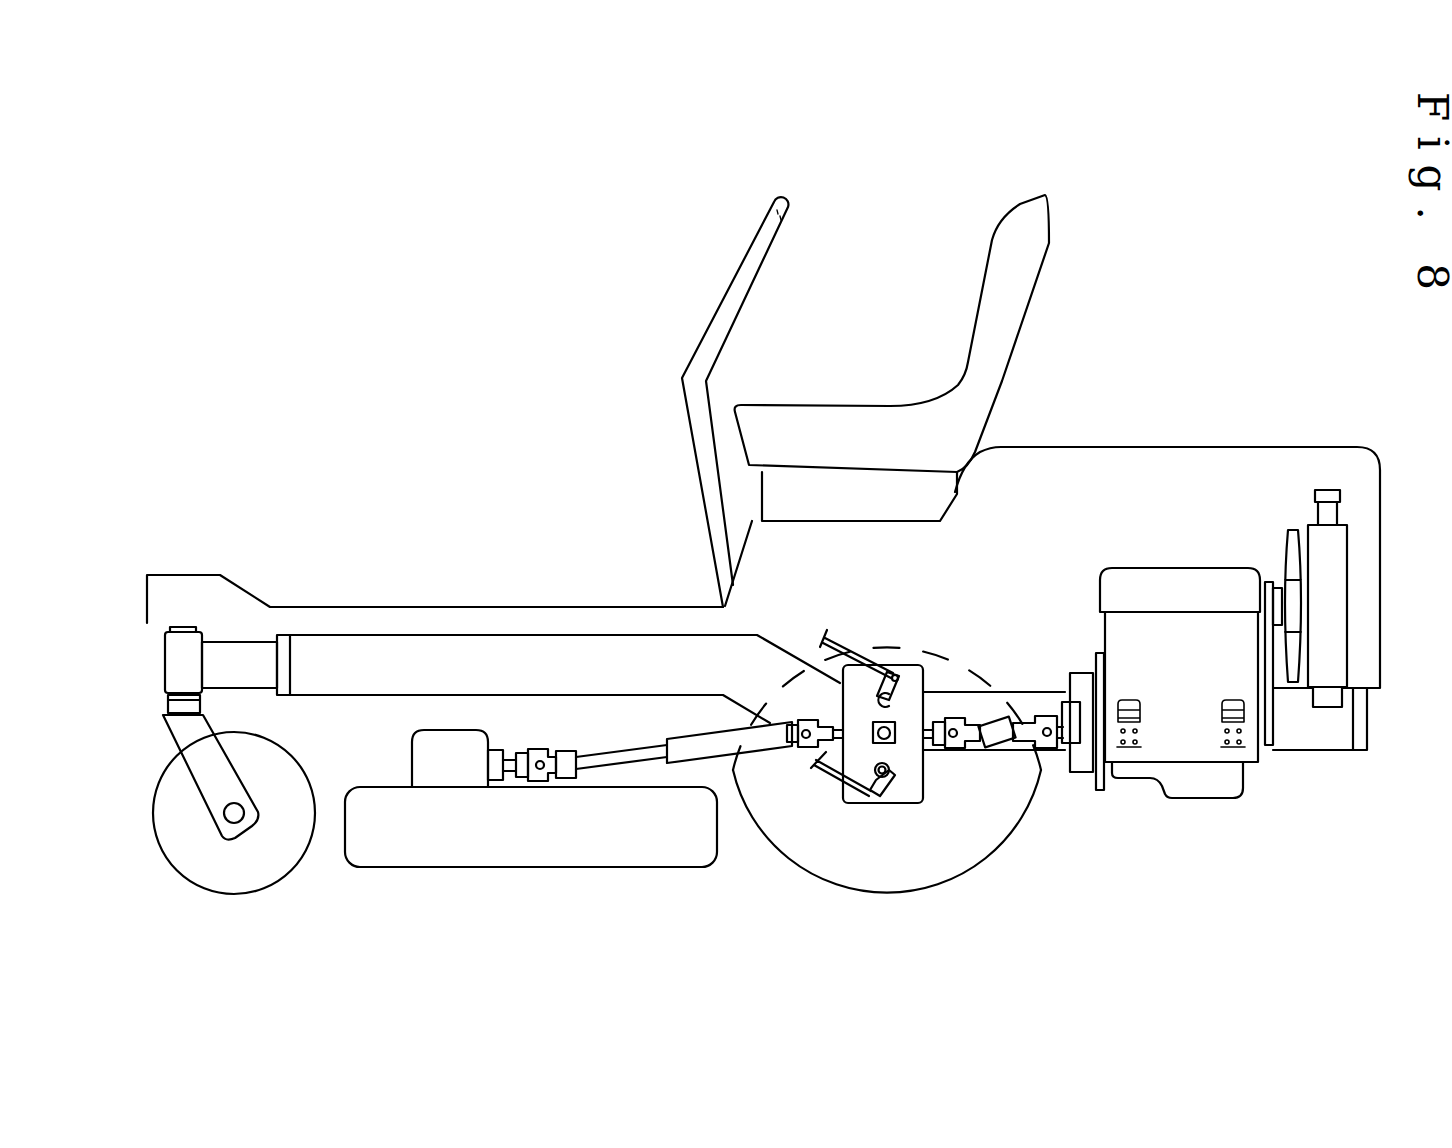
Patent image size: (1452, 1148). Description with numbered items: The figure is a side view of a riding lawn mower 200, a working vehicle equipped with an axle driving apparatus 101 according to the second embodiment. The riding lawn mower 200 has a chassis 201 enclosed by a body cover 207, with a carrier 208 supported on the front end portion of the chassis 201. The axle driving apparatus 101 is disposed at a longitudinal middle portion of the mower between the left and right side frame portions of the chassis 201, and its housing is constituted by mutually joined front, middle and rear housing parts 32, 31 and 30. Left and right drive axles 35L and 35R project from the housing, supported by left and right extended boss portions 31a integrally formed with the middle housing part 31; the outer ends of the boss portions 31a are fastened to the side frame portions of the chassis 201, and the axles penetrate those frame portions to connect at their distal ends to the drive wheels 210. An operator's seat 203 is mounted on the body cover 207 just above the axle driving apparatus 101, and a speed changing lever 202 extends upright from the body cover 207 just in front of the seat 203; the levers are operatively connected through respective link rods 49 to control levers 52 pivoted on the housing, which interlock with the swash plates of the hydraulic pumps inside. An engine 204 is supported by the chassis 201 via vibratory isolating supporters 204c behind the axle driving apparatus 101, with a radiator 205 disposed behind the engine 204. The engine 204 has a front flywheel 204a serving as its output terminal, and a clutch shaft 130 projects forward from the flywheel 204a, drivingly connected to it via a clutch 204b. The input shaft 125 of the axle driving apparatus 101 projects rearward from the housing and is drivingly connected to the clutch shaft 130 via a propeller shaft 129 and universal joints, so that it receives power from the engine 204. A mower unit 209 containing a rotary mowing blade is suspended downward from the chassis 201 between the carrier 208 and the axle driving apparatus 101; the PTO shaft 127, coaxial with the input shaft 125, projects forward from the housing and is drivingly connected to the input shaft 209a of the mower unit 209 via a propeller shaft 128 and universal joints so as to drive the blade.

The riding lawn mower 200 is at (481, 371).
The chassis 201 is at (420, 648).
The speed changing lever 202 is at (717, 293).
The operator's seat 203 is at (882, 404).
The engine 204 is at (1200, 678).
The front flywheel 204a is at (1102, 790).
The clutch 204b is at (1070, 772).
The vibratory isolating supporter 204c is at (1140, 718).
The radiator 205 is at (1305, 528).
The body cover 207 is at (497, 607).
The carrier 208 is at (285, 772).
The mower unit 209 is at (593, 846).
The input shaft of mower unit 209a is at (508, 753).
The drive wheel 210 is at (984, 581).
The axle driving apparatus 101 is at (910, 631).
The input shaft 125 is at (940, 722).
The PTO shaft 127 is at (838, 750).
The propeller shaft 128 is at (637, 745).
The propeller shaft 129 is at (1032, 775).
The clutch shaft 130 is at (1053, 693).
The rear housing part 30 is at (924, 749).
The middle housing part 31 is at (924, 749).
The front housing part 32 is at (918, 773).
The extended boss portion 31a is at (873, 730).
The right drive axle 35R is at (906, 797).
The left drive axle 35L is at (886, 742).
The link rod 49 is at (848, 650).
The control lever 52 is at (905, 680).